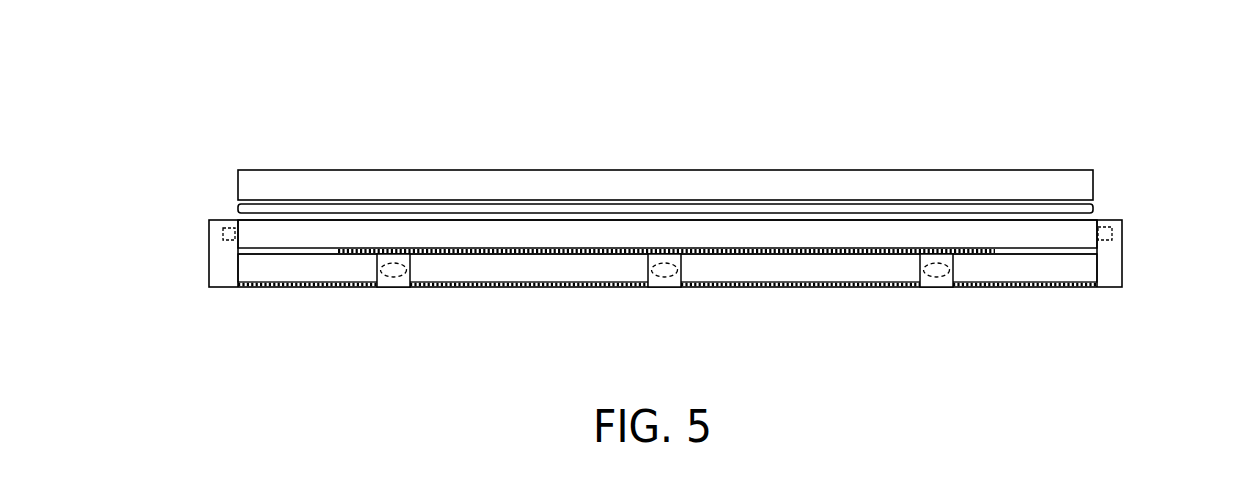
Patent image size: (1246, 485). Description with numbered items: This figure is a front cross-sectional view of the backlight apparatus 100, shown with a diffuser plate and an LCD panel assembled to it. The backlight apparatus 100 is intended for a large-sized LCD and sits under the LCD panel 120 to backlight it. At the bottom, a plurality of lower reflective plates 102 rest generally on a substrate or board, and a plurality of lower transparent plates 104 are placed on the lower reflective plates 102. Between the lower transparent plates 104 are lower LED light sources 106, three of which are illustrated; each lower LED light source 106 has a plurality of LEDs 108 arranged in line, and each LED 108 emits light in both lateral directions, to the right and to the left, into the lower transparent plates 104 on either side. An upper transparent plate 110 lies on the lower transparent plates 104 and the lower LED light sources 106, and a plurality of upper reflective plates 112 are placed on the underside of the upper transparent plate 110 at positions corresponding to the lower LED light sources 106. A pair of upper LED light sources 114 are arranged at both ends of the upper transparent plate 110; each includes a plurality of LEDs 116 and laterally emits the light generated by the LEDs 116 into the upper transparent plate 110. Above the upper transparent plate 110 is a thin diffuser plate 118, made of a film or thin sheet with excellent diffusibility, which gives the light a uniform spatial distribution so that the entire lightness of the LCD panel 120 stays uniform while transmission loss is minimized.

The backlight apparatus 100 is at (675, 78).
The lower reflective plate 102 is at (468, 287).
The lower transparent plate 104 is at (515, 265).
The lower LED light source 106 is at (652, 282).
The LED 108 is at (668, 277).
The upper transparent plate 110 is at (1020, 235).
The upper reflective plate 112 is at (888, 255).
The upper LED light source 114 is at (220, 270).
The LED 116 is at (221, 232).
The diffuser plate 118 is at (238, 207).
The LCD panel 120 is at (373, 177).